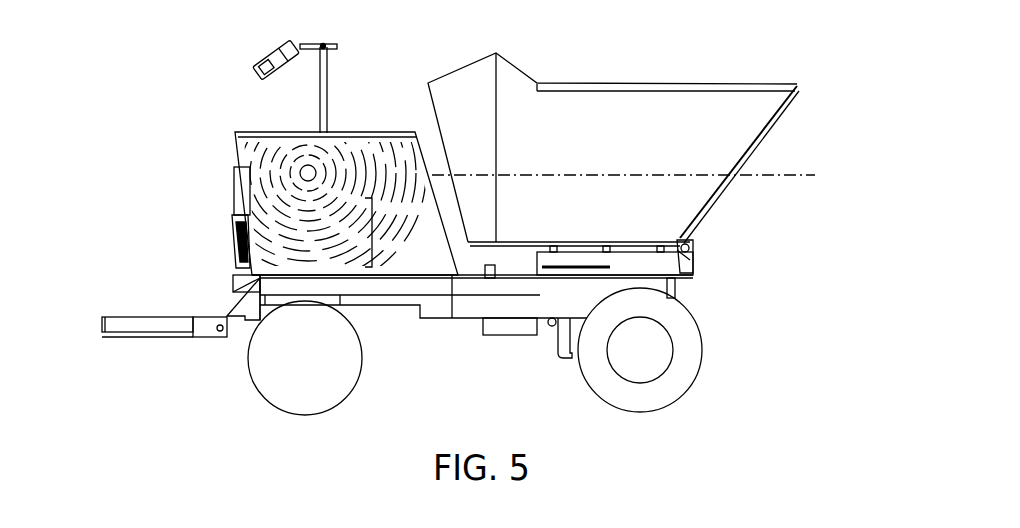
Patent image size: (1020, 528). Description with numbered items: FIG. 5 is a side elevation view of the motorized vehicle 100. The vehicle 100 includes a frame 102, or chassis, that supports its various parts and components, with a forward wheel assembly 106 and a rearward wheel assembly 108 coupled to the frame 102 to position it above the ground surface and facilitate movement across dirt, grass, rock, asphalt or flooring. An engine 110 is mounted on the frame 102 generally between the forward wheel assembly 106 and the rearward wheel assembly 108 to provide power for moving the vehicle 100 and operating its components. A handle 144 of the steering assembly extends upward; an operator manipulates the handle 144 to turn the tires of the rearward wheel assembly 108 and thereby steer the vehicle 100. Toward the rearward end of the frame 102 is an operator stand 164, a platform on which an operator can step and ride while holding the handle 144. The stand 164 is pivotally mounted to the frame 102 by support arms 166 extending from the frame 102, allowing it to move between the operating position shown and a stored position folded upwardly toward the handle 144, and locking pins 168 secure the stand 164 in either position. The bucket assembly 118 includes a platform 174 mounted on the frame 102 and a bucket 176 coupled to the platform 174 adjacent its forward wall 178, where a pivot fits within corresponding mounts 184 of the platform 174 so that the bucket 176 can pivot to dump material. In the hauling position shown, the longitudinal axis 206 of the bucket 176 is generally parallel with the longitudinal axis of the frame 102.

The vehicle 100 is at (118, 86).
The frame 102 is at (394, 287).
The forward wheel assembly 106 is at (655, 432).
The rearward wheel assembly 108 is at (308, 430).
The engine 110 is at (210, 231).
The bucket assembly 118 is at (808, 271).
The handle 144 is at (327, 107).
The operator stand 164 is at (112, 323).
The support arm 166 is at (240, 322).
The locking pin 168 is at (218, 333).
The platform 174 is at (655, 258).
The bucket 176 is at (803, 80).
The forward wall 178 is at (706, 210).
The mount 184 is at (693, 257).
The longitudinal axis 206 is at (800, 175).